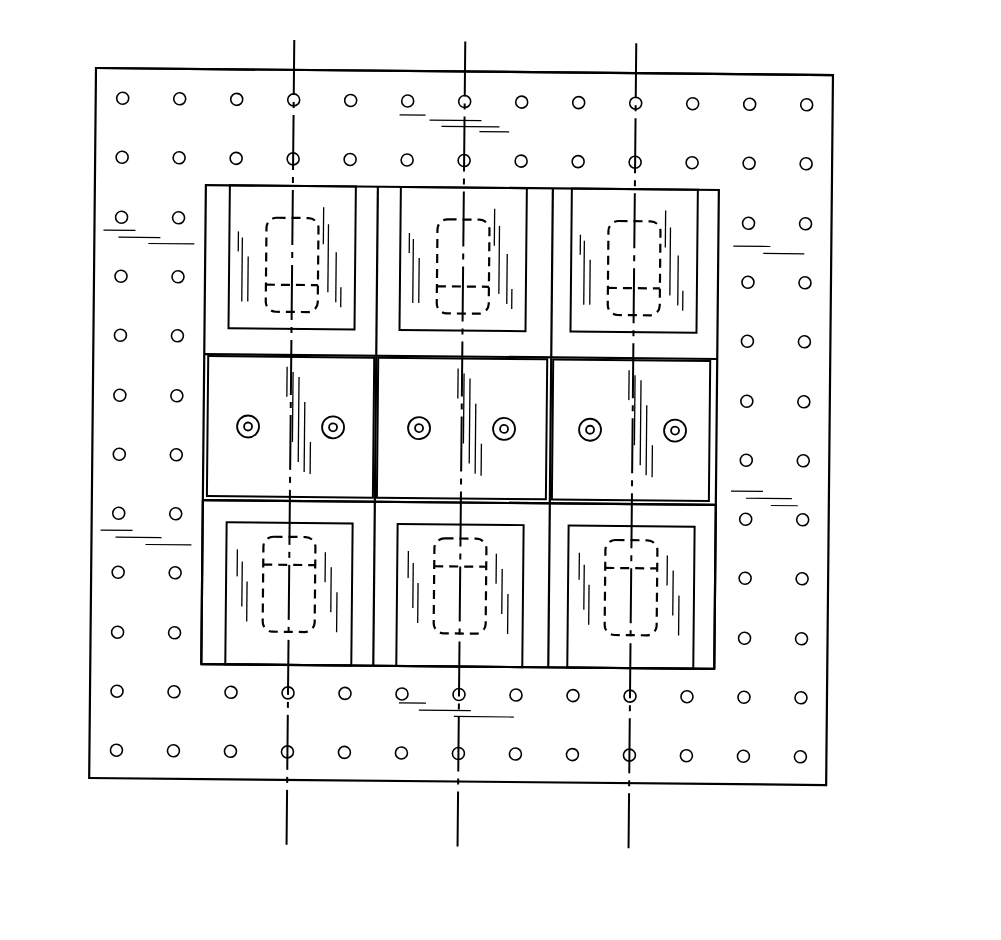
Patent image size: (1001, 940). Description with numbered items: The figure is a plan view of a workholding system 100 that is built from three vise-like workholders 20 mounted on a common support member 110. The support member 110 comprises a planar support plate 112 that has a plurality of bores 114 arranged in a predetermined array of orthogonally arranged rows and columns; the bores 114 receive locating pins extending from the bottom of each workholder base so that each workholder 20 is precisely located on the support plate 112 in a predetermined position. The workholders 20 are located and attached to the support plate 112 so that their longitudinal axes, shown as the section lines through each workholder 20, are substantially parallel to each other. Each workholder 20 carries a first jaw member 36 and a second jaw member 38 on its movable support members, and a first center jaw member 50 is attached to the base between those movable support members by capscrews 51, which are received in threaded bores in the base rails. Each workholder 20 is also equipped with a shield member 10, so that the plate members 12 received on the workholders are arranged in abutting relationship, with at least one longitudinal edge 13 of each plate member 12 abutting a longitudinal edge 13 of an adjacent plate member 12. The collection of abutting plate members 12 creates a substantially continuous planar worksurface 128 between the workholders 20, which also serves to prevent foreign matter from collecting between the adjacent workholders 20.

The workholding system 100 is at (171, 785).
The support member 110 is at (484, 70).
The planar support plate 112 is at (780, 88).
The bores 114 is at (351, 92).
The substantially continuous planar worksurface 128 is at (722, 329).
The shield member 10 is at (201, 609).
The plate member 12 is at (249, 517).
The longitudinal edge 13 is at (201, 647).
The vise-like workholder 20 is at (243, 665).
The first jaw member 36 is at (273, 658).
The second jaw member 38 is at (273, 213).
The first center jaw member 50 is at (259, 388).
The capscrews 51 is at (251, 437).